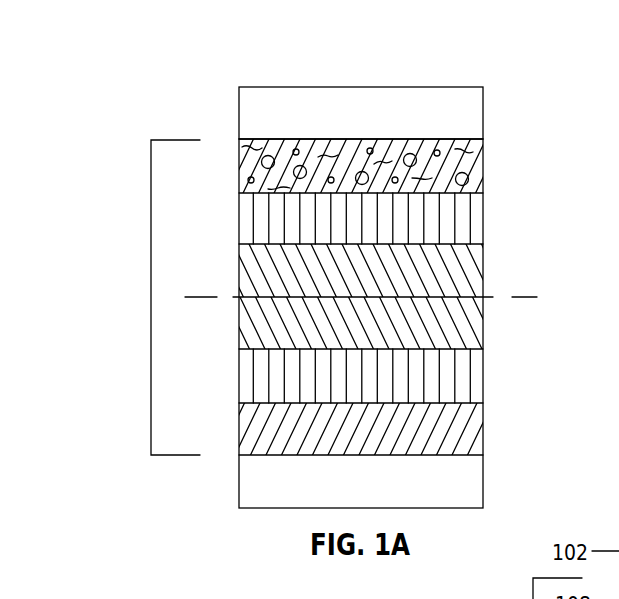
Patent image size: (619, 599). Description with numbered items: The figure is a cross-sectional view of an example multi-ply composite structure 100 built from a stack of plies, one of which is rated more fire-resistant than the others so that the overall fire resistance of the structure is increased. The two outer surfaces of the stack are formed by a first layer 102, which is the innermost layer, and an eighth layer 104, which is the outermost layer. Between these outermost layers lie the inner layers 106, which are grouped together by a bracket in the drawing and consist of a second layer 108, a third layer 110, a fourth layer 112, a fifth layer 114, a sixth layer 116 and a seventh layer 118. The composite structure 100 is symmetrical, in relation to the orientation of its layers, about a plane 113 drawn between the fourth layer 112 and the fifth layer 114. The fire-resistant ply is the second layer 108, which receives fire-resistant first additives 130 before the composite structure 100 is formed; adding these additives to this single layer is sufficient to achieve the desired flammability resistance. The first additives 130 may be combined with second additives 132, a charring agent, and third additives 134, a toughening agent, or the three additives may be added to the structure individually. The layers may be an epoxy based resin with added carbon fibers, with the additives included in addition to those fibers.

The composite structure 100 is at (499, 45).
The first layer 102 is at (239, 115).
The eighth layer 104 is at (239, 482).
The inner layers 106 is at (151, 297).
The second layer 108 is at (239, 167).
The third layer 110 is at (239, 220).
The fourth layer 112 is at (239, 272).
The plane 113 is at (493, 297).
The fifth layer 114 is at (239, 323).
The sixth layer 116 is at (239, 376).
The seventh layer 118 is at (239, 430).
The first additives 130 is at (430, 148).
The second additives 132 is at (467, 185).
The third additives 134 is at (471, 152).